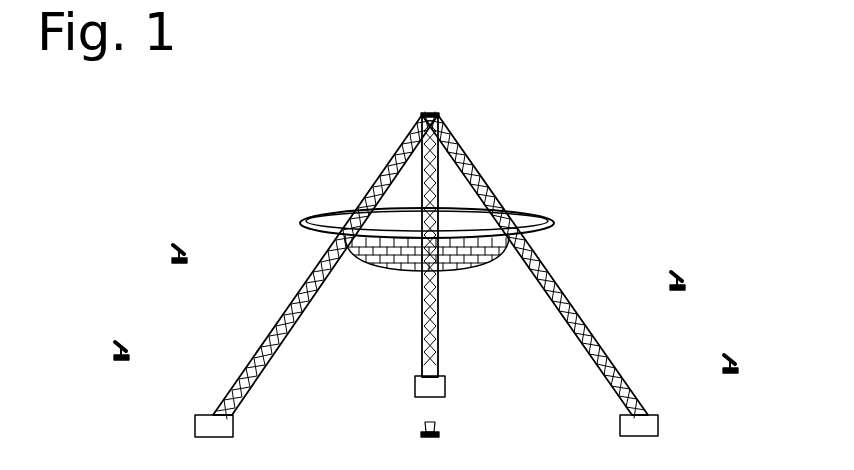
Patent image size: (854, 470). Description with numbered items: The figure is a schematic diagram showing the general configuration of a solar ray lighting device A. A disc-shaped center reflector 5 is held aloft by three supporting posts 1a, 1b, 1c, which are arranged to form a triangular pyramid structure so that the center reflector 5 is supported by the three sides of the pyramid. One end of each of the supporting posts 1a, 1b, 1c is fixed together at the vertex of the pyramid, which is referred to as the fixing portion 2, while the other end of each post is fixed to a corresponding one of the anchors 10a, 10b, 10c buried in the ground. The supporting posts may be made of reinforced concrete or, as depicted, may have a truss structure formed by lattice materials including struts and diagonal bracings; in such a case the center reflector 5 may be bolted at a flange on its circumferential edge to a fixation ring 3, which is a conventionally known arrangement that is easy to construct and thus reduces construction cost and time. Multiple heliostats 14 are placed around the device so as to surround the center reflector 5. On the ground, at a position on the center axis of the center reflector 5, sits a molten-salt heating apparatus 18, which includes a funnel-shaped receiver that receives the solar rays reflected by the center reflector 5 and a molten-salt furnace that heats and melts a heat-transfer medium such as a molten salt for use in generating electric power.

The solar ray lighting device A is at (358, 106).
The supporting post 1a is at (550, 272).
The supporting post 1b is at (438, 301).
The supporting post 1c is at (298, 290).
The fixing portion 2 is at (455, 109).
The fixation ring 3 is at (323, 208).
The center reflector 5 is at (542, 198).
The anchor 10a is at (658, 423).
The anchor 10b is at (415, 389).
The anchor 10c is at (233, 424).
The heliostat 14 is at (180, 245).
The molten-salt heating apparatus 18 is at (440, 430).